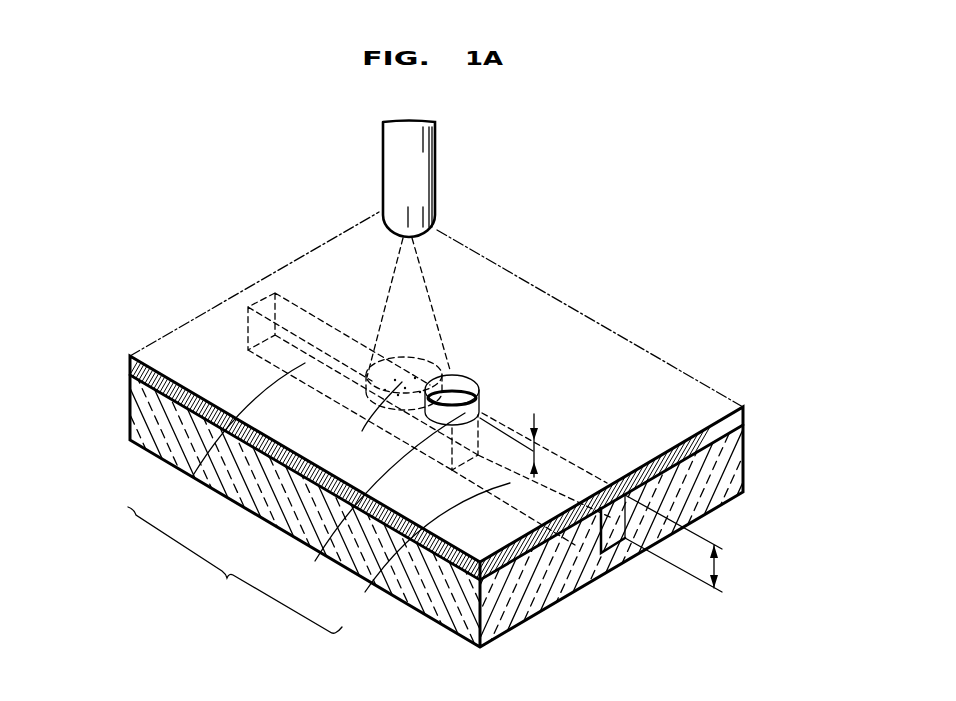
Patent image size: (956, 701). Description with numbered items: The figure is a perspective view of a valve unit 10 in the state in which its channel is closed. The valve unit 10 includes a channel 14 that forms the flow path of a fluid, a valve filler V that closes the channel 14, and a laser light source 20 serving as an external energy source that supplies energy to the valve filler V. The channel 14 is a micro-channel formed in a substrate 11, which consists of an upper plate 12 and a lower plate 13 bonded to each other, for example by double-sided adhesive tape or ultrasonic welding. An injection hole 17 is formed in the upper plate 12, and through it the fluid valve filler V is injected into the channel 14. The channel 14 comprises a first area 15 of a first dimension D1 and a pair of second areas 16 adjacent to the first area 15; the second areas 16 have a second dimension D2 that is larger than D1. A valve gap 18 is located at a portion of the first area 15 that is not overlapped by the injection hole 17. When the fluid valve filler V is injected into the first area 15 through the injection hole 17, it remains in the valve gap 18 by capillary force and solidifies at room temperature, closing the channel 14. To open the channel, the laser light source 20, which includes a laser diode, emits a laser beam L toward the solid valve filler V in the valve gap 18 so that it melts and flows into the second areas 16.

The valve unit 10 is at (173, 261).
The substrate 11 is at (800, 390).
The upper plate 12 is at (744, 417).
The lower plate 13 is at (744, 458).
The channel 14 is at (235, 570).
The first area 15 is at (315, 561).
The second areas 16 is at (192, 477).
The injection hole 17 is at (462, 385).
The valve gap 18 is at (410, 368).
The laser light source 20 is at (425, 163).
The laser beam L is at (387, 299).
The valve filler V is at (362, 431).
The first dimension D1 is at (550, 443).
The second dimension D2 is at (689, 543).